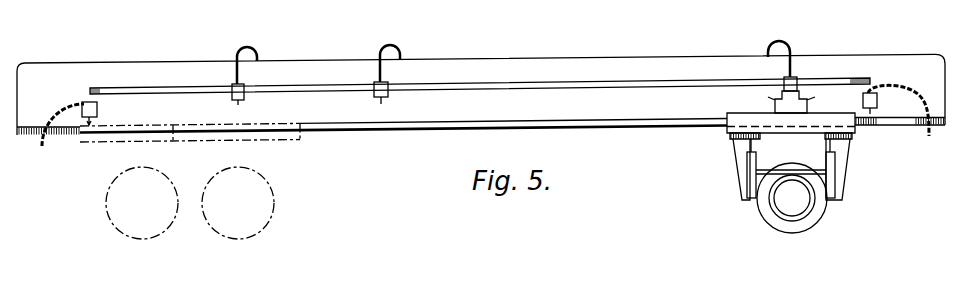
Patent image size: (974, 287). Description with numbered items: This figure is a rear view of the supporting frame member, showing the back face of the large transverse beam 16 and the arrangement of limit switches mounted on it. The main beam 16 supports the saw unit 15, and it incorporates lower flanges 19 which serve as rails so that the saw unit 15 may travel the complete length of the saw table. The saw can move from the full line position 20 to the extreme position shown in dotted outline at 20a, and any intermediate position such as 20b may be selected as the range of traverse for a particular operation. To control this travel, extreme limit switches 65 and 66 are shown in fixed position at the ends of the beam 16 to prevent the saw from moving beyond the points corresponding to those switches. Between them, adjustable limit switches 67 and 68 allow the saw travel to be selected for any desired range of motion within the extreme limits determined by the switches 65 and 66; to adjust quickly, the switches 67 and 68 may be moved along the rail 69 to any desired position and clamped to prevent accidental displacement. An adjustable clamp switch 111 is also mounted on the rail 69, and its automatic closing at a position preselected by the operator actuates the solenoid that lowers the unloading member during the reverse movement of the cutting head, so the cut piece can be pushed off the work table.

The saw unit 15 is at (731, 174).
The transverse beam 16 is at (482, 62).
The lower flanges 19 is at (574, 119).
The full line position of saw 20 is at (772, 219).
The extreme position of saw 20a is at (106, 216).
The intermediate position of saw 20b is at (220, 234).
The extreme limit switch 65 is at (886, 106).
The extreme limit switch 66 is at (84, 112).
The adjustable limit switch 67 is at (794, 84).
The adjustable limit switch 68 is at (244, 90).
The rail 69 is at (549, 83).
The adjustable clamp switch 111 is at (388, 84).